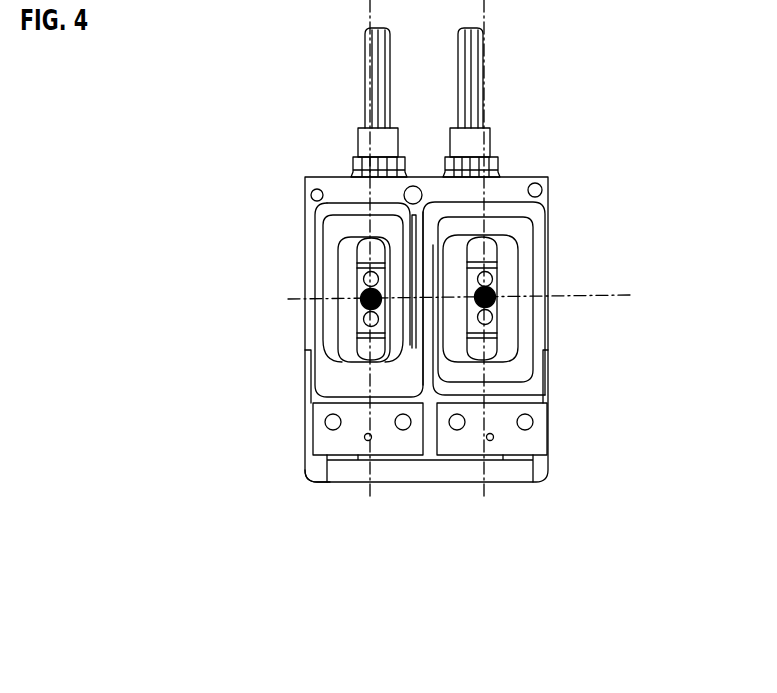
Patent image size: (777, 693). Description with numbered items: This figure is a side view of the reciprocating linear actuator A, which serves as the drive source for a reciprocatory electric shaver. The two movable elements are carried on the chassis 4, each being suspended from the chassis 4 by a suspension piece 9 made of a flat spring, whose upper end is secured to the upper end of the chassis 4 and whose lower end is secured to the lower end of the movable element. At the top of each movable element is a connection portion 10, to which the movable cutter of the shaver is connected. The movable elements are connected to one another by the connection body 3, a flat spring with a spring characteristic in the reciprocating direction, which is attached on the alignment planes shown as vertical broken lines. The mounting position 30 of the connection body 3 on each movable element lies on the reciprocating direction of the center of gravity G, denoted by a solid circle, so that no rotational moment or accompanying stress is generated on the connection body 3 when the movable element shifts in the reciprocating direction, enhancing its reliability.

The connection body 3 is at (522, 360).
The chassis 4 is at (550, 465).
The suspension piece 9 is at (497, 408).
The connection portion 10 is at (470, 65).
The mounting position 30 is at (477, 302).
The center of gravity G is at (475, 292).
The reciprocating linear actuator A is at (317, 475).